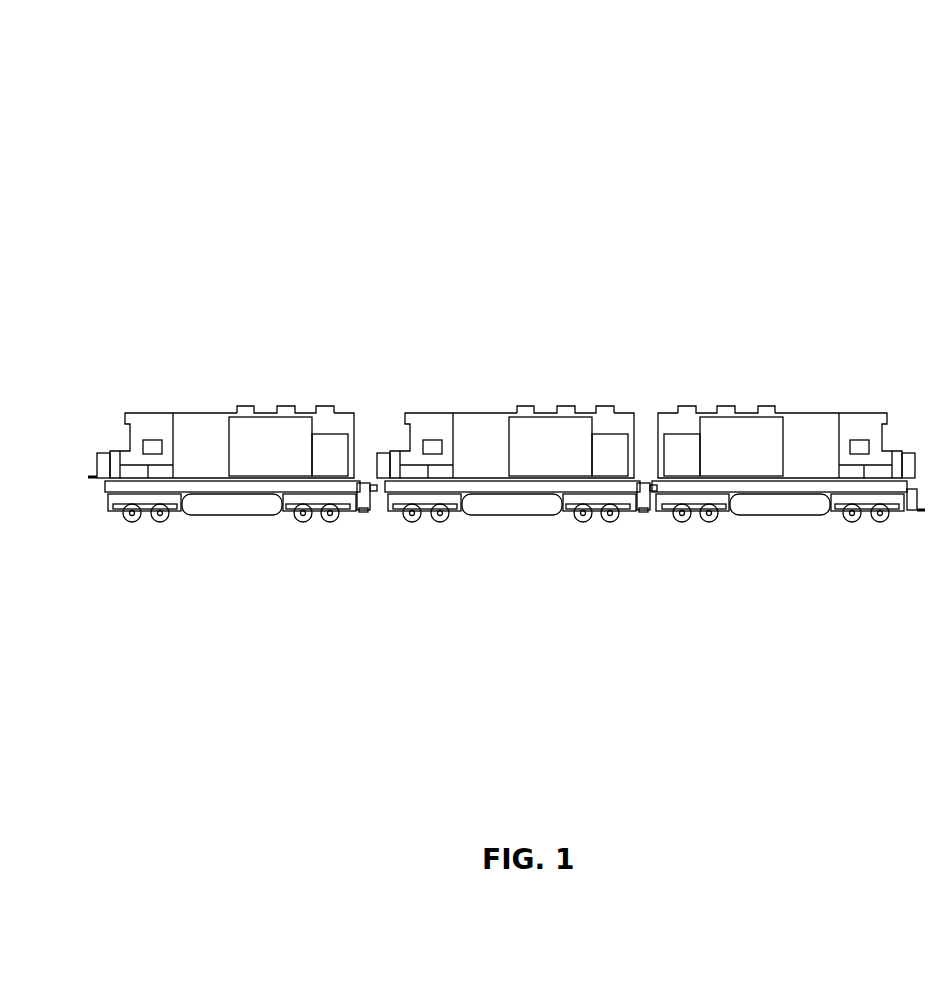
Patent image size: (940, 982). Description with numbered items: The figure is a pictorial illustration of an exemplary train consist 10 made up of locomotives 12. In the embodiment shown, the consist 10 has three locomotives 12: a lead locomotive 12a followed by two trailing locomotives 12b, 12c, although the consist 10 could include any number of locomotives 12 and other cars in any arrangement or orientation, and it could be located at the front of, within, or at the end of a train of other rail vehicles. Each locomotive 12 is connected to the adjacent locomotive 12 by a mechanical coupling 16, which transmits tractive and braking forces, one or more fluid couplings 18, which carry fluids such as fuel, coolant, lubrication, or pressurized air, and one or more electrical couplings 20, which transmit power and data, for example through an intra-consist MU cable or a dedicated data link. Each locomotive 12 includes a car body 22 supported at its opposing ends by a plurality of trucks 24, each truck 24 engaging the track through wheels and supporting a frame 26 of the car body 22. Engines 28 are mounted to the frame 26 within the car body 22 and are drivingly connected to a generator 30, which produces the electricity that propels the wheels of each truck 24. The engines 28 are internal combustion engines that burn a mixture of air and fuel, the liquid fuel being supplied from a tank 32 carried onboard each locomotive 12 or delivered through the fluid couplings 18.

The train consist 10 is at (485, 114).
The locomotive 12 is at (263, 285).
The lead locomotive 12a is at (176, 412).
The trailing locomotive 12b is at (457, 412).
The trailing locomotive 12c is at (845, 412).
The mechanical coupling 16 is at (361, 513).
The fluid coupling 18 is at (369, 483).
The electrical coupling 20 is at (366, 484).
The car body 22 is at (350, 416).
The truck 24 is at (142, 518).
The frame 26 is at (181, 516).
The engine 28 is at (264, 416).
The generator 30 is at (322, 440).
The tank 32 is at (233, 518).